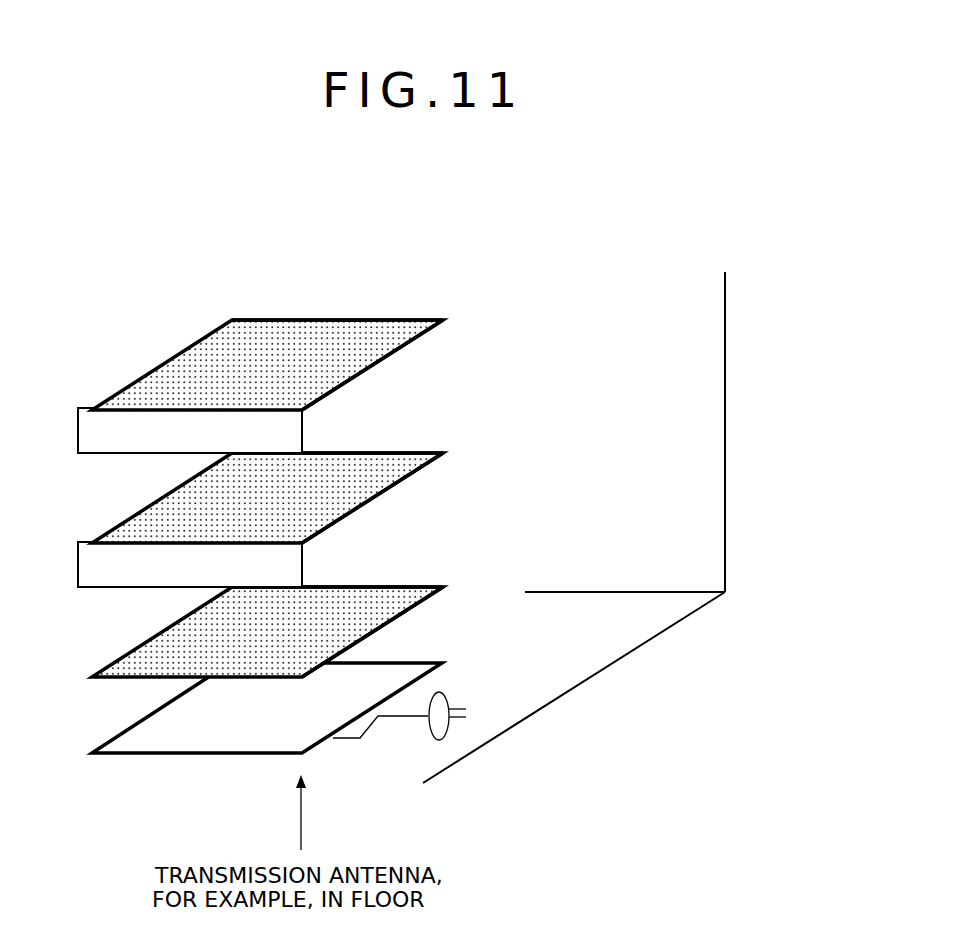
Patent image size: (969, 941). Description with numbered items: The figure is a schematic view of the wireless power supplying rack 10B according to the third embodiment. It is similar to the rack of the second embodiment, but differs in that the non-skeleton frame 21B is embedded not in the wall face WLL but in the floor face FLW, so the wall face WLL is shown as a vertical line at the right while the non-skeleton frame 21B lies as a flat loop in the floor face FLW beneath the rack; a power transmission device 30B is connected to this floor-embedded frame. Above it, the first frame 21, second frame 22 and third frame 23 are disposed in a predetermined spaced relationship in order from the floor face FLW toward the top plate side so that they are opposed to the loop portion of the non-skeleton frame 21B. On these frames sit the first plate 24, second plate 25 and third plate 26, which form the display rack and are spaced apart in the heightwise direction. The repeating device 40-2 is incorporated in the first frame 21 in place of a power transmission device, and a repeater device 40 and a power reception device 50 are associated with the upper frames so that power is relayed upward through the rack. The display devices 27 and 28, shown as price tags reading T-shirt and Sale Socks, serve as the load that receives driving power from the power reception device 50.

The wireless power supplying rack 10B is at (458, 207).
The first frame 21 is at (437, 587).
The second frame 22 is at (438, 453).
The third frame 23 is at (438, 320).
The first plate 24 is at (367, 320).
The second plate 25 is at (360, 453).
The third plate 26 is at (362, 587).
The display device 27 is at (84, 408).
The display device 28 is at (70, 542).
The power reception device 50 is at (390, 359).
The repeater device 40 is at (390, 493).
The repeating device 40-2 is at (415, 608).
The non-skeleton frame 21B is at (405, 655).
The power transmission device 30B is at (425, 716).
The wall face WLL is at (715, 425).
The floor face FLW is at (605, 653).